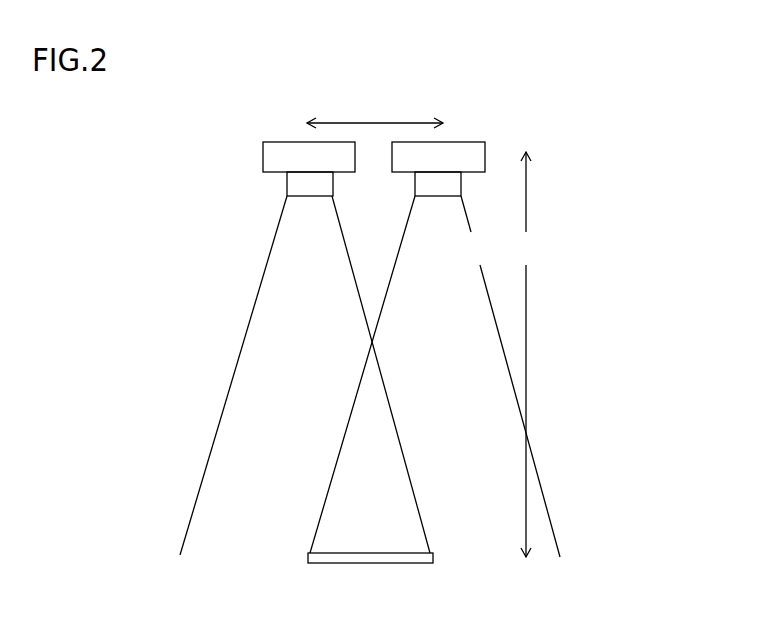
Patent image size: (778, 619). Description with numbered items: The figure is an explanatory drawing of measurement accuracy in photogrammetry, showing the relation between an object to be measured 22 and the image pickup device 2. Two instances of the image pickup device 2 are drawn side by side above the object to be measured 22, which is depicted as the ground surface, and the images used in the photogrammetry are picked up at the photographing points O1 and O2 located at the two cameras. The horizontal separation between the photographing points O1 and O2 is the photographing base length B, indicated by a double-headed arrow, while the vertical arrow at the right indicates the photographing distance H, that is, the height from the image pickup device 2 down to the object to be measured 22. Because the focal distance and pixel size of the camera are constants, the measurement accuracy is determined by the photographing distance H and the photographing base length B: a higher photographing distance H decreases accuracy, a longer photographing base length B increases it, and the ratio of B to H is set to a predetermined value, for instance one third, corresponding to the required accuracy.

The image pickup device 2 is at (263, 157).
The object to be measured 22 is at (433, 561).
The photographing point O1 is at (305, 333).
The photographing point O2 is at (435, 334).
The photographing base length B is at (375, 112).
The photographing distance H is at (555, 354).